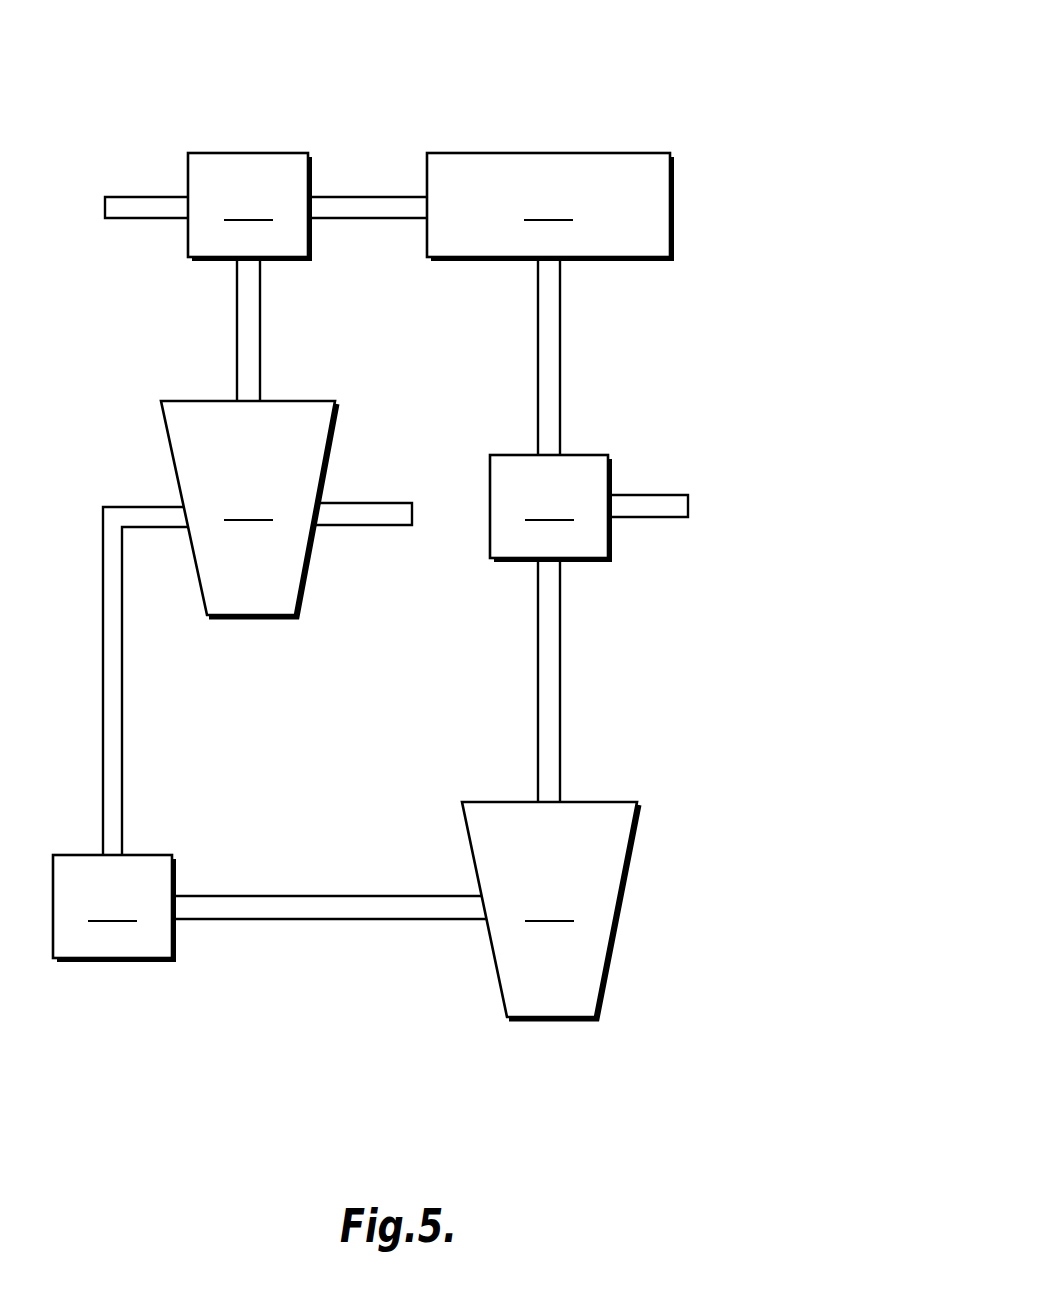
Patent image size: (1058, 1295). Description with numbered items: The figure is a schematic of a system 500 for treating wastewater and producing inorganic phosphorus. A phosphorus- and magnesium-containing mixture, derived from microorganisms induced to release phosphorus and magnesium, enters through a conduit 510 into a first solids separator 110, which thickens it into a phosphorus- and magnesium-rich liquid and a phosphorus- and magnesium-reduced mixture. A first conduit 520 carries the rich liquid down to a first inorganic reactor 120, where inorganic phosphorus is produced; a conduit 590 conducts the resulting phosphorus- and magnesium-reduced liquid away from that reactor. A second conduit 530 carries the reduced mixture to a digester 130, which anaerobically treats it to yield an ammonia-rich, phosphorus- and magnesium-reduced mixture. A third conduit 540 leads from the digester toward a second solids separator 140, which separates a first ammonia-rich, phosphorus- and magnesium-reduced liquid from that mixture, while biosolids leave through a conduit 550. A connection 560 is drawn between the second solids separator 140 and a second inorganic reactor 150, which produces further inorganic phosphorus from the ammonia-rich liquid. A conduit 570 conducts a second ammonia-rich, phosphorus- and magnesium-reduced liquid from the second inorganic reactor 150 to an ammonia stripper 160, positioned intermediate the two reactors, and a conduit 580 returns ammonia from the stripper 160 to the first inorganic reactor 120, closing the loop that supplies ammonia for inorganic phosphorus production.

The system 500 is at (748, 90).
The first solids separator 110 is at (250, 207).
The first inorganic reactor 120 is at (249, 509).
The digester 130 is at (550, 207).
The second solids separator 140 is at (551, 508).
The second inorganic reactor 150 is at (550, 910).
The ammonia stripper 160 is at (114, 908).
The conduit 510 is at (148, 203).
The first conduit 520 is at (245, 320).
The second conduit 530 is at (369, 200).
The third conduit 540 is at (557, 350).
The conduit 550 is at (652, 503).
The stream 560 is at (550, 668).
The conduit 570 is at (353, 896).
The conduit 580 is at (103, 683).
The conduit 590 is at (375, 512).